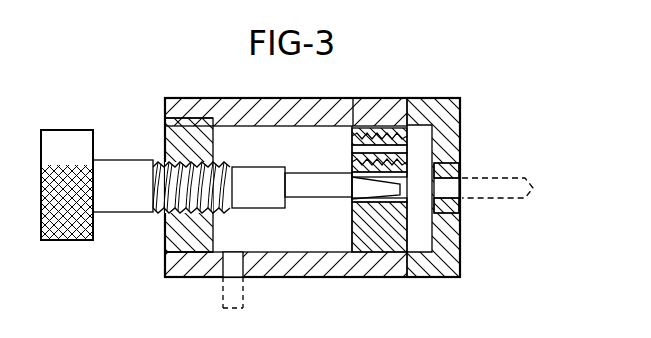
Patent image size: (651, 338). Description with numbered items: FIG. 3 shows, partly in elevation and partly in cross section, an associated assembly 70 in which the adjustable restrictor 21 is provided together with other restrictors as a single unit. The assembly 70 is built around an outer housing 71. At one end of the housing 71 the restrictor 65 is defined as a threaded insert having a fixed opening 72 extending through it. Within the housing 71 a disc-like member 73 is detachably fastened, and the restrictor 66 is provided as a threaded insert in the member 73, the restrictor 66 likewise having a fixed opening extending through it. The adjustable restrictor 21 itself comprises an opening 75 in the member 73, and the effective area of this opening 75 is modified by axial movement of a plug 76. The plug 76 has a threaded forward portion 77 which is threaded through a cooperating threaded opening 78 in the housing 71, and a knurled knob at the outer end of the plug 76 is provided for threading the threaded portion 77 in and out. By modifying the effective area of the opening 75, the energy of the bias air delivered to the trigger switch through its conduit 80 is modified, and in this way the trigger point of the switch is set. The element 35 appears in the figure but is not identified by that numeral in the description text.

The associated assembly 70 is at (420, 84).
The outer housing 71 is at (218, 98).
The adjustable restrictor 21 is at (306, 287).
The conduit 80 is at (220, 296).
The threaded forward portion 77 is at (180, 193).
The threaded opening 78 is at (182, 160).
The plug 76 is at (364, 127).
The restrictor 66 is at (411, 152).
The opening 75 is at (392, 200).
The disc-like member 73 is at (368, 247).
The restrictor 65 is at (463, 172).
The fixed opening 72 is at (465, 197).
The probe 35 is at (528, 181).